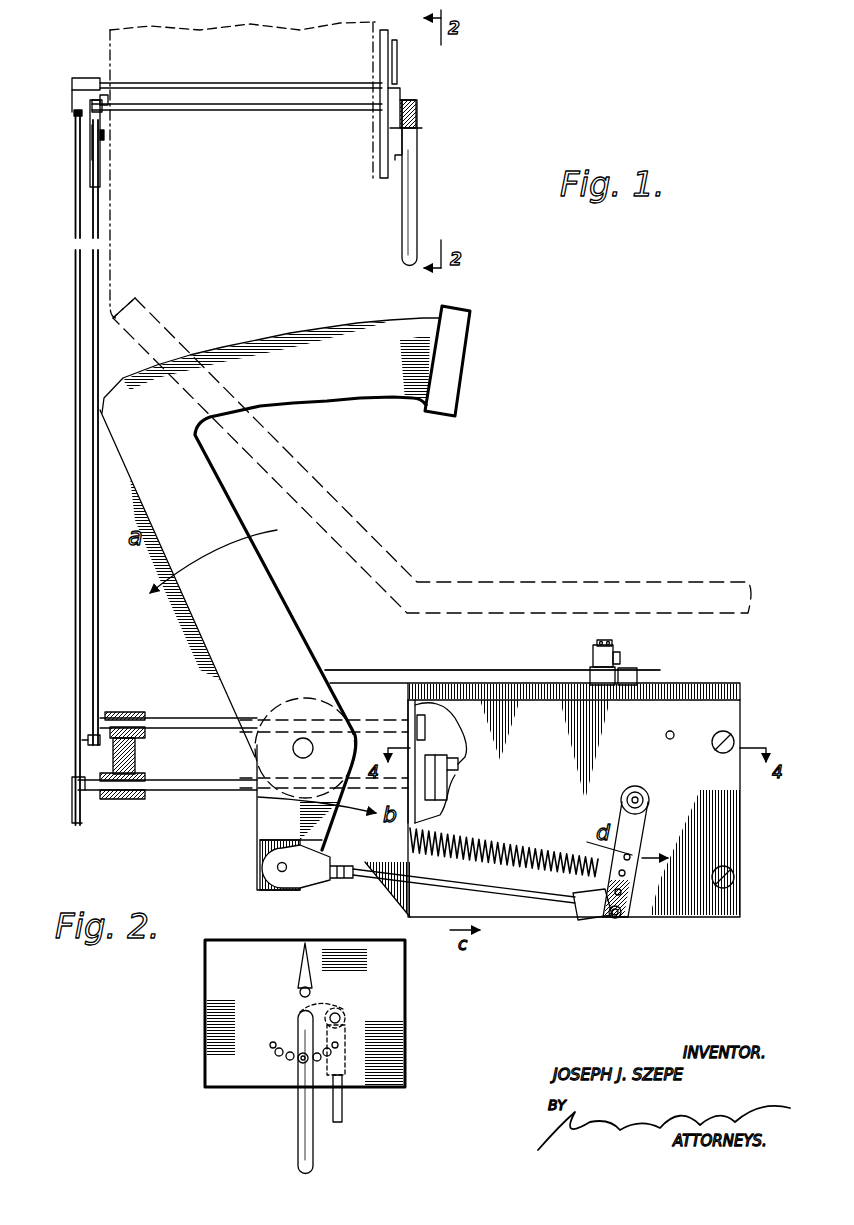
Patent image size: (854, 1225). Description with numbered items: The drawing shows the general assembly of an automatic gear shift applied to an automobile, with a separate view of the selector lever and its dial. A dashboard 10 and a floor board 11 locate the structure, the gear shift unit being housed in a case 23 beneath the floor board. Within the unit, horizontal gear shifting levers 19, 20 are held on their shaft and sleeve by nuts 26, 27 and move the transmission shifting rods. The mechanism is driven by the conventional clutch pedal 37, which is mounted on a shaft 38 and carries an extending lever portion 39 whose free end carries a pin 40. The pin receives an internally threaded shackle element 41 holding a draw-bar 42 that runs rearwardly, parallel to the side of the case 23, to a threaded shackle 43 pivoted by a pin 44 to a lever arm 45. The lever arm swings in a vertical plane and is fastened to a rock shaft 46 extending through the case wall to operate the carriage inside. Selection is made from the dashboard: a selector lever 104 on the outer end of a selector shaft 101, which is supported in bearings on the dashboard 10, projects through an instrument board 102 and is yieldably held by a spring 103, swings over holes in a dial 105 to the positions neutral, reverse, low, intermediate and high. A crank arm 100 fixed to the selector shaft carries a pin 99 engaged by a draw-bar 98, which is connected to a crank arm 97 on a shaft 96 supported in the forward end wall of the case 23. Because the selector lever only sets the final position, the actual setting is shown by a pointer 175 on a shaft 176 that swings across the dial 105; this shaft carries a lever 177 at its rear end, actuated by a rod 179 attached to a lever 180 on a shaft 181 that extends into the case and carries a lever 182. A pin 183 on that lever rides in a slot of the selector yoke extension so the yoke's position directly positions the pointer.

In FIG. 1, the dashboard 10 is at (372, 52).
In FIG. 1, the floor board 11 is at (118, 212).
In FIG. 1, the gear shifting lever 19 is at (593, 656).
In FIG. 1, the gear shifting lever 20 is at (640, 672).
In FIG. 1, the case 23 is at (740, 812).
In FIG. 1, the nut 26 is at (609, 641).
In FIG. 1, the nut 27 is at (620, 668).
In FIG. 1, the clutch pedal 37 is at (284, 590).
In FIG. 1, the shaft 38 is at (292, 751).
In FIG. 1, the lever portion 39 is at (262, 842).
In FIG. 1, the pin 40 is at (280, 870).
In FIG. 1, the shackle element 41 is at (305, 885).
In FIG. 1, the draw-bar 42 is at (548, 908).
In FIG. 1, the threaded shackle 43 is at (593, 918).
In FIG. 1, the pin 44 is at (618, 918).
In FIG. 1, the lever arm 45 is at (640, 847).
In FIG. 1, the rock shaft 46 is at (650, 800).
In FIG. 1, the shaft 96 is at (190, 738).
In FIG. 1, the crank arm 97 is at (88, 740).
In FIG. 1, the draw-bar 98 is at (100, 655).
In FIG. 1, the pin 99 is at (104, 135).
In FIG. 2, the pin 99 is at (342, 1107).
In FIG. 1, the crank arm 100 is at (100, 110).
In FIG. 1, the selector shaft 101 is at (265, 110).
In FIG. 1, the instrument board 102 is at (392, 95).
In FIG. 1, the spring 103 is at (418, 118).
In FIG. 1, the selector lever 104 is at (410, 200).
In FIG. 2, the selector lever 104 is at (313, 1147).
In FIG. 1, the dial 105 is at (383, 178).
In FIG. 2, the dial 105 is at (392, 996).
In FIG. 2, the pointer 175 is at (313, 982).
In FIG. 1, the shaft 176 is at (250, 82).
In FIG. 2, the shaft 176 is at (303, 996).
In FIG. 1, the lever 177 is at (80, 78).
In FIG. 1, the rod 179 is at (75, 612).
In FIG. 1, the lever 180 is at (72, 808).
In FIG. 1, the shaft 181 is at (210, 790).
In FIG. 1, the lever 182 is at (440, 812).
In FIG. 1, the pin 183 is at (458, 764).